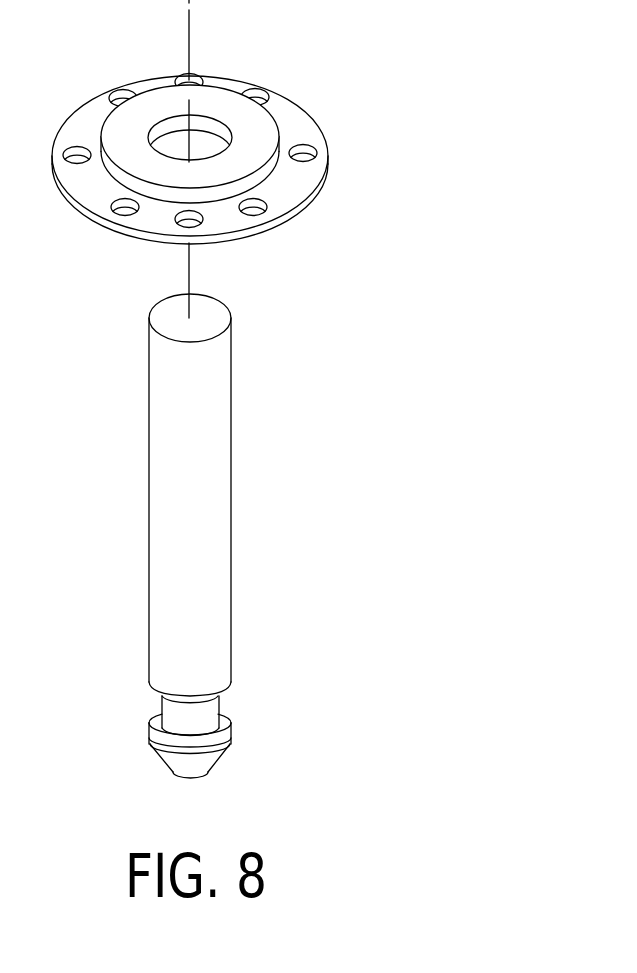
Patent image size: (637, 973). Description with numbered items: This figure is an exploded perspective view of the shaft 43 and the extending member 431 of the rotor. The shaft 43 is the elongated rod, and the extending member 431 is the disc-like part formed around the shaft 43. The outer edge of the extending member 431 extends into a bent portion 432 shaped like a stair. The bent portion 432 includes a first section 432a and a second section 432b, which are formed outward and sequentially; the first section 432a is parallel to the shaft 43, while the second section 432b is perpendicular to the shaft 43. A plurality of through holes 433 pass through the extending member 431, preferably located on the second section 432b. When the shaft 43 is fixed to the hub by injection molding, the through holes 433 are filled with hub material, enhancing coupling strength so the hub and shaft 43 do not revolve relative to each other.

The shaft 43 is at (218, 490).
The extending member 431 is at (220, 107).
The bent portion 432 is at (483, 137).
The first section 432a is at (267, 172).
The second section 432b is at (283, 193).
The through holes 433 is at (300, 148).